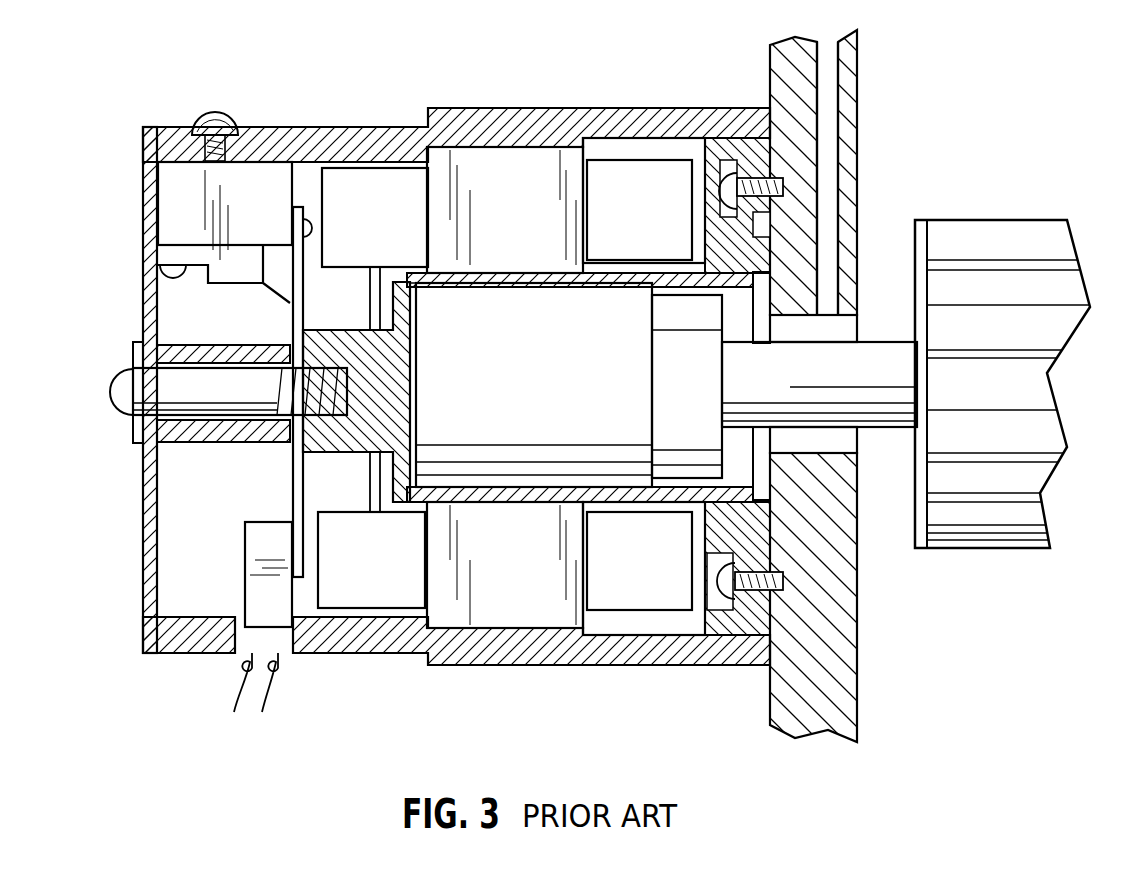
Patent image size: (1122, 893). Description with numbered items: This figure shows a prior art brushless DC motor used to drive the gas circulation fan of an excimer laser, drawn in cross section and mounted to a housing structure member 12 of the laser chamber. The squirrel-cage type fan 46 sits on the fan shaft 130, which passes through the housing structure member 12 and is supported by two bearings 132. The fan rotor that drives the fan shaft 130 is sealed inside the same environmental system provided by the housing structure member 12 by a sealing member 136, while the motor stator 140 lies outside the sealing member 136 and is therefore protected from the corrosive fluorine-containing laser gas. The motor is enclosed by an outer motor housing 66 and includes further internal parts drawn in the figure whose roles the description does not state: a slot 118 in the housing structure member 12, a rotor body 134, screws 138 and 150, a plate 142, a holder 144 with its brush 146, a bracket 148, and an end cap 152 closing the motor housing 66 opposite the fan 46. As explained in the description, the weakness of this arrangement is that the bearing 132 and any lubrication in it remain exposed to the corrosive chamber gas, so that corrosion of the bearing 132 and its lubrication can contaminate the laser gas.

The housing structure member 12 is at (858, 52).
The squirrel-cage type fan 46 is at (990, 220).
The motor housing 66 is at (378, 125).
The slot 118 is at (818, 114).
The fan shaft 130 is at (880, 343).
The bearing 132 is at (862, 445).
The rotor 134 is at (514, 382).
The sealing member 136 is at (718, 236).
The screw 138 is at (752, 224).
The motor stator 140 is at (553, 163).
The brush plate 142 is at (293, 478).
The brush holder 144 is at (245, 560).
The brush 146 is at (383, 473).
The bracket 148 is at (237, 277).
The end cap screw 150 is at (267, 187).
The end cap 152 is at (141, 298).